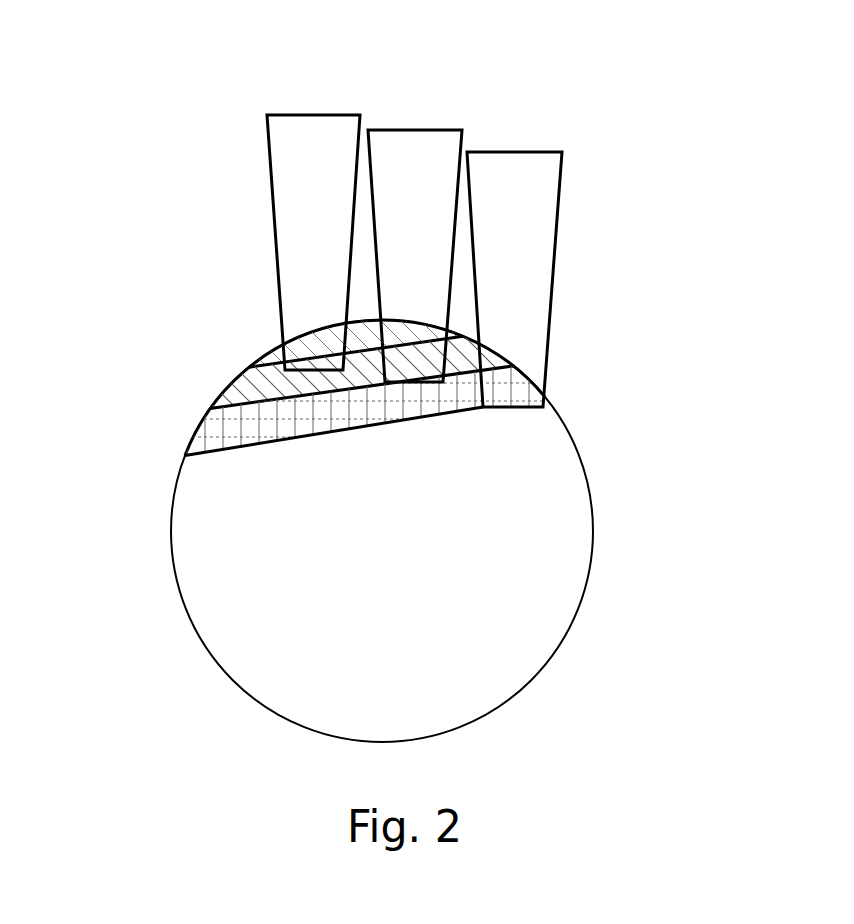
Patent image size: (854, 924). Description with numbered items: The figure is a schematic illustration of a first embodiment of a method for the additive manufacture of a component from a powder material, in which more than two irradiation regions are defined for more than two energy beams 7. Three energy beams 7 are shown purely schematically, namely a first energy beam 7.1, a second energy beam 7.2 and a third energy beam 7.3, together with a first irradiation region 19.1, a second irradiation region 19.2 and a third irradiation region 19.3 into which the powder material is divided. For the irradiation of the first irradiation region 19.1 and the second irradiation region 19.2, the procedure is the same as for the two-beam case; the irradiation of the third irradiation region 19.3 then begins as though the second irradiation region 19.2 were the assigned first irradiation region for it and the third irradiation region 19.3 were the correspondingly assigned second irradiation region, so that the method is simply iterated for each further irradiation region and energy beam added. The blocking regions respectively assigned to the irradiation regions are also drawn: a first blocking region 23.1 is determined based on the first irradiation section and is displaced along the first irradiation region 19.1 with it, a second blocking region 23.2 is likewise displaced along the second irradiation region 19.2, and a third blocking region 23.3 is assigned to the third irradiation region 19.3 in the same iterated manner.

The energy beams 7 is at (415, 206).
The first energy beam 7.1 is at (241, 187).
The second energy beam 7.2 is at (489, 193).
The third energy beam 7.3 is at (577, 206).
The first blocking region 23.1 is at (267, 150).
The second blocking region 23.2 is at (462, 131).
The third blocking region 23.3 is at (558, 217).
The first irradiation region 19.1 is at (280, 360).
The second irradiation region 19.2 is at (240, 393).
The third irradiation region 19.3 is at (208, 434).